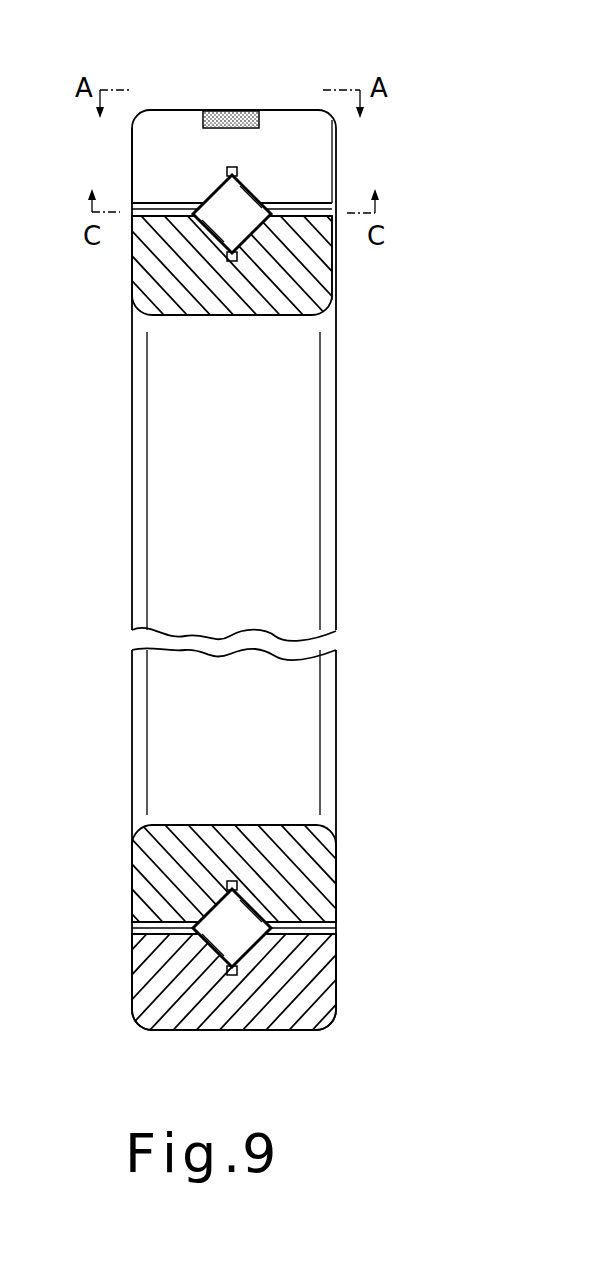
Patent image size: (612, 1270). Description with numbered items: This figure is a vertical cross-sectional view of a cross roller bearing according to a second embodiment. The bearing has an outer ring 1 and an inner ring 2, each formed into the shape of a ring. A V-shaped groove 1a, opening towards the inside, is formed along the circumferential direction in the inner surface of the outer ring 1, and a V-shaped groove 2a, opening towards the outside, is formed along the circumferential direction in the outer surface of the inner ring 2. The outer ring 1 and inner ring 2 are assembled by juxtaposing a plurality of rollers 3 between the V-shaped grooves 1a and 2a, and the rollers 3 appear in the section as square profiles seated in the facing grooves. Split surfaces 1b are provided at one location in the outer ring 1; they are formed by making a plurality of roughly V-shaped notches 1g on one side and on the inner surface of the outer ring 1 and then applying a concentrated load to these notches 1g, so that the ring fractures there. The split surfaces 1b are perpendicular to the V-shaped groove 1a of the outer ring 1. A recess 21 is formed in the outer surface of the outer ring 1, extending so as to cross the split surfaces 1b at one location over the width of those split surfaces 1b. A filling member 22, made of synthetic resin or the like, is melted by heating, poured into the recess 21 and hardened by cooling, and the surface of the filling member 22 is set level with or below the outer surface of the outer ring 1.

The outer ring 1 is at (304, 110).
The V-shaped groove 1a is at (218, 186).
The split surfaces 1b is at (137, 152).
The V-shaped notches 1g is at (337, 147).
The inner ring 2 is at (198, 316).
The V-shaped groove 2a is at (215, 231).
The rollers 3 is at (247, 205).
The recess 21 is at (255, 110).
The filling member 22 is at (222, 110).